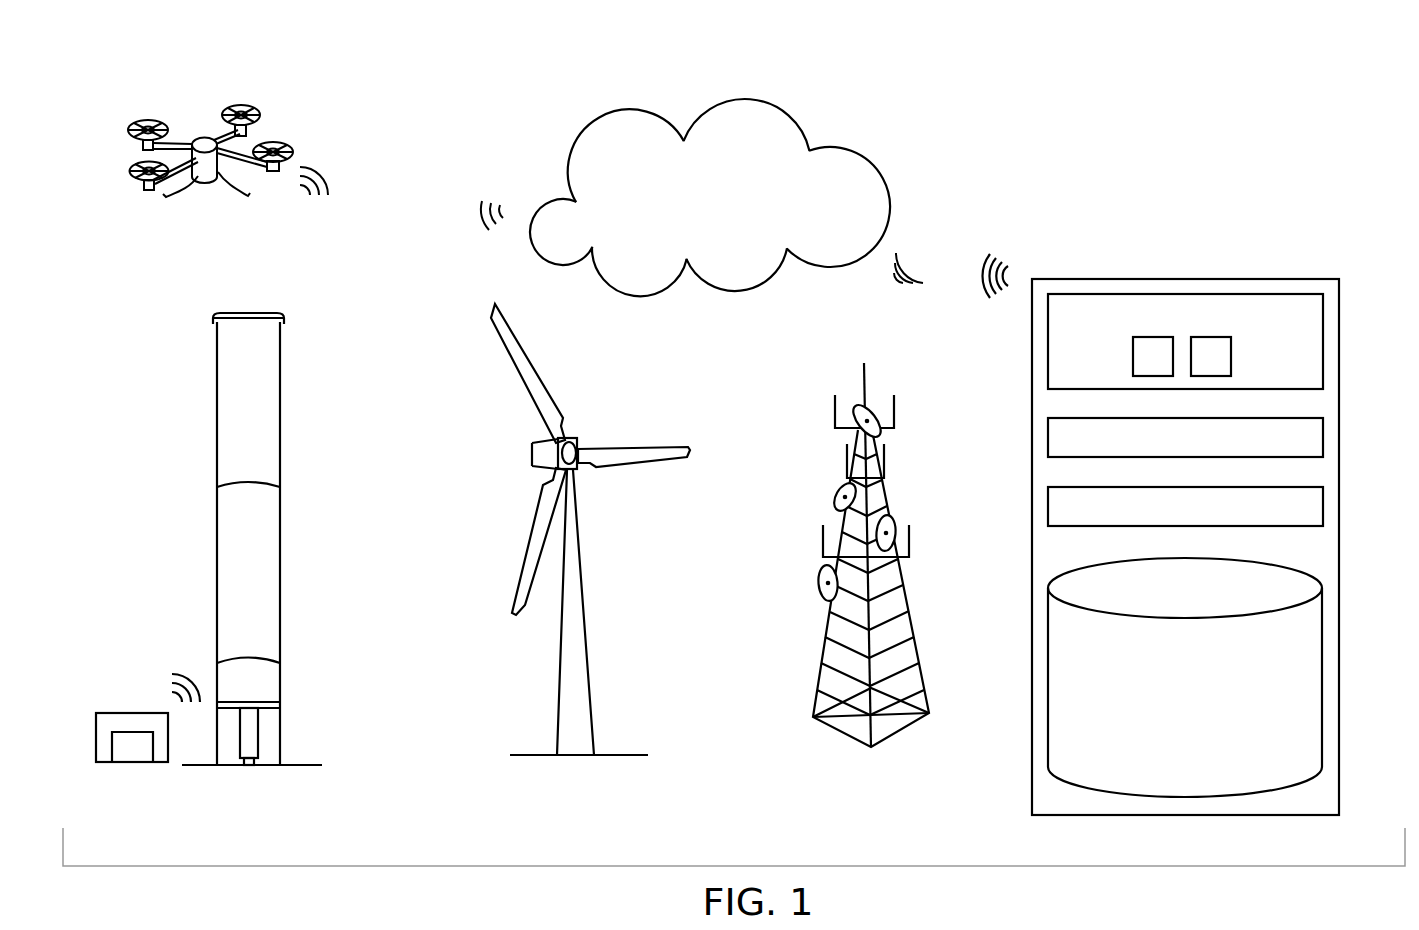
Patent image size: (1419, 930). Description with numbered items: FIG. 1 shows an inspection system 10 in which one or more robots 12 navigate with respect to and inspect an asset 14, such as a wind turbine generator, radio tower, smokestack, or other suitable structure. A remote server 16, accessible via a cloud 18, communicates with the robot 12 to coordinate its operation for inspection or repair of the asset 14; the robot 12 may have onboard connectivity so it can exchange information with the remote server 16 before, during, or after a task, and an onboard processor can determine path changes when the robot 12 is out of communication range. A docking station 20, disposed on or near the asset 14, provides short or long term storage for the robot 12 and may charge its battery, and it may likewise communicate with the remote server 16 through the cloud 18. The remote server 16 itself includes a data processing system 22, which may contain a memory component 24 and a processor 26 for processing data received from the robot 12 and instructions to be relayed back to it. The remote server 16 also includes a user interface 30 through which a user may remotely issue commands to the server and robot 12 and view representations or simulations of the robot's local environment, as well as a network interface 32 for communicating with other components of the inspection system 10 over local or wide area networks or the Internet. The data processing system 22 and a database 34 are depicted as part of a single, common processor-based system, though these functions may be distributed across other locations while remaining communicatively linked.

The inspection system 10 is at (1118, 80).
The robot 12 is at (282, 138).
The asset 14 is at (280, 440).
The remote server 16 is at (1183, 278).
The cloud 18 is at (719, 219).
The docking station 20 is at (131, 712).
The data processing system 22 is at (1323, 340).
The memory component 24 is at (1132, 353).
The processor 26 is at (1231, 353).
The user interface 30 is at (1323, 437).
The network interface 32 is at (1323, 503).
The database 34 is at (1323, 673).